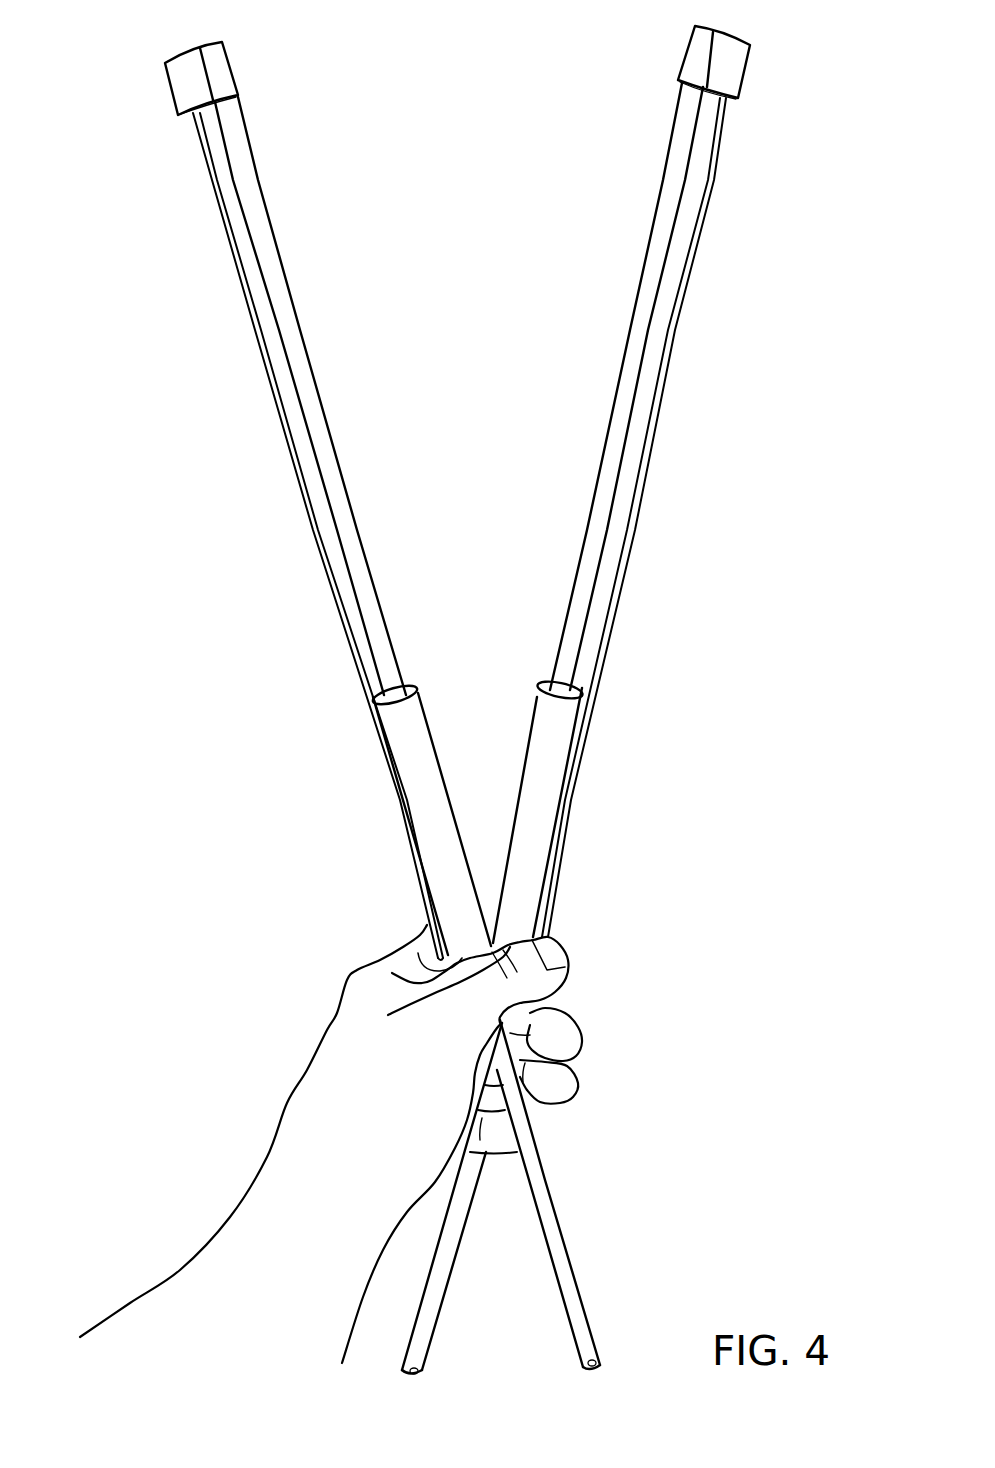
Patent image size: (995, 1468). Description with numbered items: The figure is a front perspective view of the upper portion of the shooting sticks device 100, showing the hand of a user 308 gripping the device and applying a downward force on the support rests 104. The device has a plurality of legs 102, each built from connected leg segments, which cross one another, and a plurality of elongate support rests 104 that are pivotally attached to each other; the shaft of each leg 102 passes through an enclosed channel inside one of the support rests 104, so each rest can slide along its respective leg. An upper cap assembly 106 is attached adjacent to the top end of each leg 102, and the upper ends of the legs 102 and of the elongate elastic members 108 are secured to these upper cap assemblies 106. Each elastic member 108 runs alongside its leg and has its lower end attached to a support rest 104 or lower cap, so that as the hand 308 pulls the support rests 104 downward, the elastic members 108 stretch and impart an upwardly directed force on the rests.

The shooting sticks device 100 is at (113, 295).
The legs 102 is at (318, 393).
The elongate support rests 104 is at (424, 708).
The upper cap assemblies 106 is at (232, 65).
The elongate elastic members 108 is at (298, 483).
The hand of a user 308 is at (335, 1018).